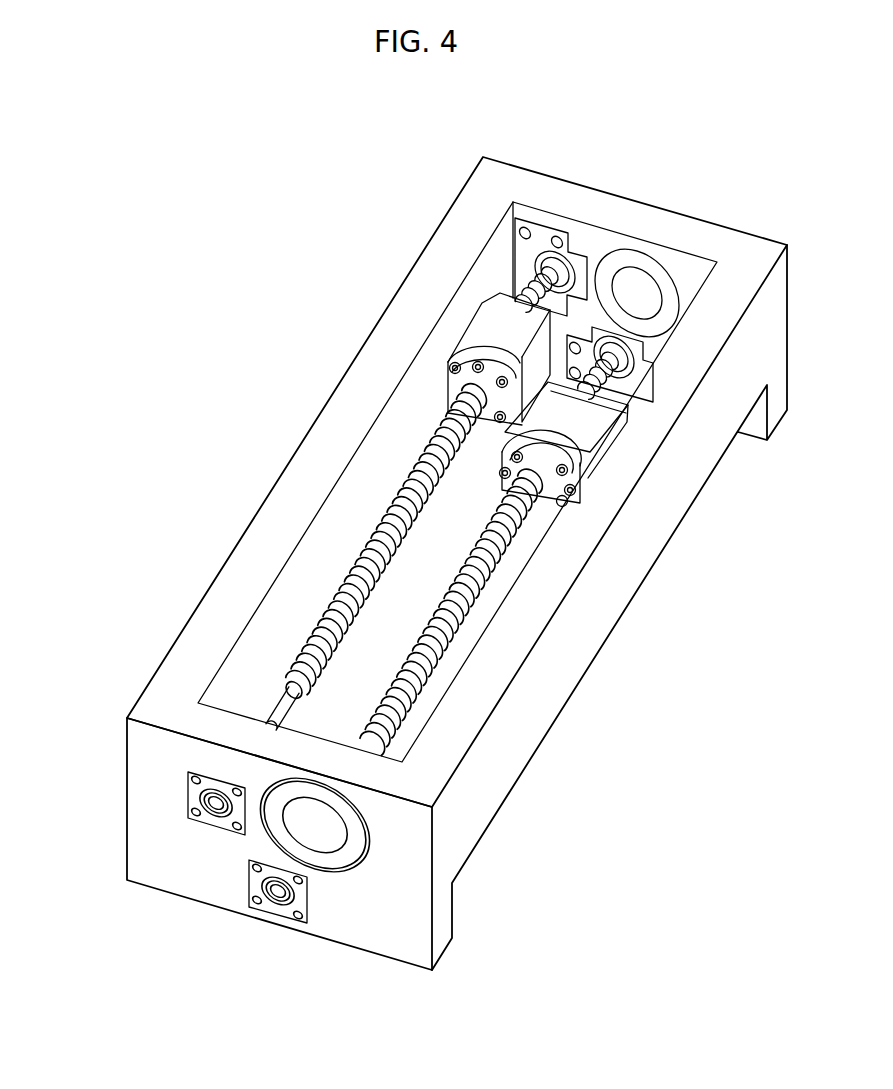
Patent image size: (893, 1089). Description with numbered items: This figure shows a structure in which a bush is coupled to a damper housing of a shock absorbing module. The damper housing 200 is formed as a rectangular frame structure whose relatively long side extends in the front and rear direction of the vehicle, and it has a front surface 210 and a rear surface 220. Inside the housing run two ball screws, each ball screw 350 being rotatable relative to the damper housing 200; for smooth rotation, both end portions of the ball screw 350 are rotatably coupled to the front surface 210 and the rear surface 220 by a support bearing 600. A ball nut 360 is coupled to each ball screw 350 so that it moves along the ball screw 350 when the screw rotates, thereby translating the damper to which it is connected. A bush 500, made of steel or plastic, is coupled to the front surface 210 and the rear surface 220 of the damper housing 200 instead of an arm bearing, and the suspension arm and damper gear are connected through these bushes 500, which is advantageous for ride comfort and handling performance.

The damper housing 200 is at (605, 599).
The front surface 210 is at (656, 222).
The rear surface 220 is at (152, 822).
The ball screw 350 is at (467, 577).
The ball nut 360 is at (563, 420).
The bush 500 is at (673, 280).
The support bearing 600 is at (588, 347).